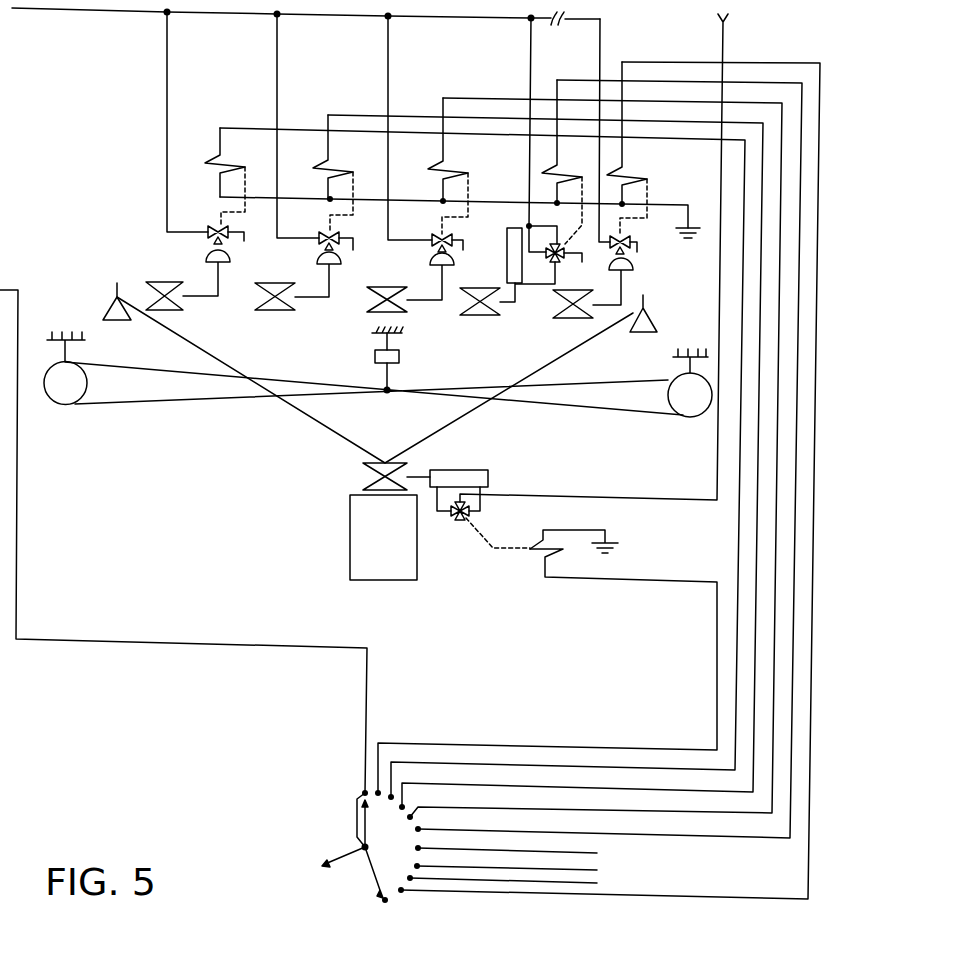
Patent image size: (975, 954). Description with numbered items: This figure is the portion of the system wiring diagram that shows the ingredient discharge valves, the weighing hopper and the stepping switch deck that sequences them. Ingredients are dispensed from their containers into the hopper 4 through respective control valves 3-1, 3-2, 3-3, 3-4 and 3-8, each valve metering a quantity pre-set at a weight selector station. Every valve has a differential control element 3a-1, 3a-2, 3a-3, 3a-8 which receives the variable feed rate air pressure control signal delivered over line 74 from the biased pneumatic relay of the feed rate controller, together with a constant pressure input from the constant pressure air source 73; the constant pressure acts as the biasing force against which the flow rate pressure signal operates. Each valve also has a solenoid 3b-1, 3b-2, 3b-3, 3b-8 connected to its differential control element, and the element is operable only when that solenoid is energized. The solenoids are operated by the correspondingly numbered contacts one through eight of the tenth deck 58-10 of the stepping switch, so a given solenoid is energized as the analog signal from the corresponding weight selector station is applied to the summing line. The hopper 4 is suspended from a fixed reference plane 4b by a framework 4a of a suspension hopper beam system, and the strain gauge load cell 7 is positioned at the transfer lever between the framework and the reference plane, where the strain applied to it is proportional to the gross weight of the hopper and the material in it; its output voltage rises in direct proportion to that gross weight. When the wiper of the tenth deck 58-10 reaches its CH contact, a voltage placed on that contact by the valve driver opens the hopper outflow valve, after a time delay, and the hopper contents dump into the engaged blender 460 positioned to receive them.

The line 74 is at (38, 8).
The solenoid 3b-1 is at (214, 158).
The solenoid 3b-2 is at (326, 163).
The solenoid 3b-3 is at (437, 162).
The solenoid 3b-8 is at (634, 170).
The differential control element 3a-1 is at (215, 236).
The differential control element 3a-2 is at (334, 238).
The differential control element 3a-3 is at (440, 233).
The differential control element 3a-8 is at (626, 242).
The constant pressure air source 73 is at (244, 241).
The control valve 3-1 is at (170, 310).
The control valve 3-2 is at (272, 311).
The control valve 3-3 is at (390, 313).
The control valve 3-4 is at (480, 316).
The control valve 3-8 is at (573, 319).
The load cell 7 is at (399, 359).
The fixed reference plane 4b is at (64, 327).
The framework 4a is at (62, 404).
The hopper 4 is at (468, 413).
The blender 460 is at (349, 540).
The tenth deck of the stepping switch 58-10 is at (335, 876).